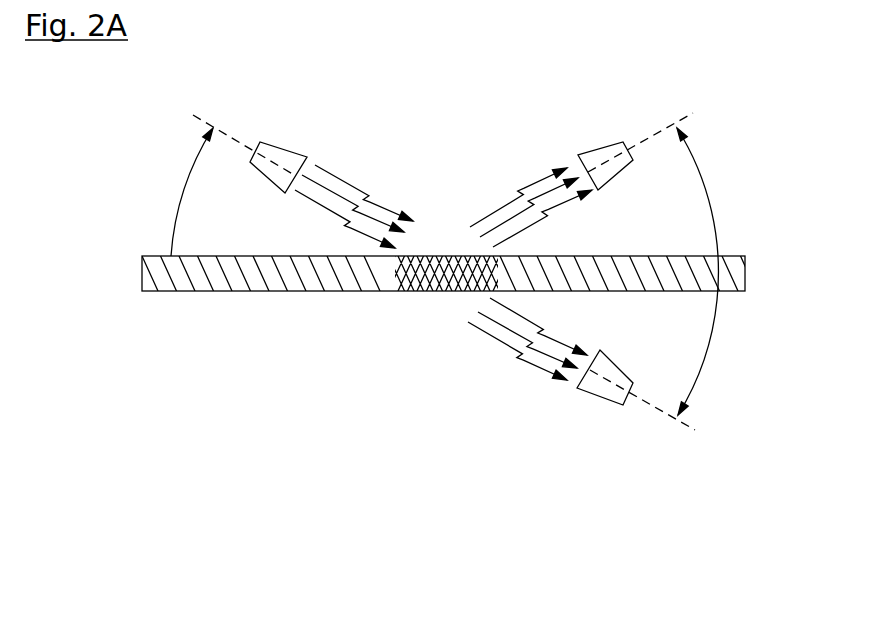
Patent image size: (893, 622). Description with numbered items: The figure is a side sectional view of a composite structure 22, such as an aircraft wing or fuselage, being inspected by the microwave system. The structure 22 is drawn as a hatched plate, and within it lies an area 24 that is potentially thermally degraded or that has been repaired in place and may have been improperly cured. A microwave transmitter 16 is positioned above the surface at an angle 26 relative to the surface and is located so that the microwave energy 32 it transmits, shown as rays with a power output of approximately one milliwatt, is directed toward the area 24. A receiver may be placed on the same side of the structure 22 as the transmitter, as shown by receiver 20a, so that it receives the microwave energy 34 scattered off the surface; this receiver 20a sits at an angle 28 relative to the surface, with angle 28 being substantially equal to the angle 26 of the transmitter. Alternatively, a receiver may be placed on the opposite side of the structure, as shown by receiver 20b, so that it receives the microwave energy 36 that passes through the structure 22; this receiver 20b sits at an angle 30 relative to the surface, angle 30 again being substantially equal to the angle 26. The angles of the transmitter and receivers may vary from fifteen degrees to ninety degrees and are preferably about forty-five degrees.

The microwave transmitter 16 is at (281, 143).
The receiver 20a is at (603, 147).
The receiver 20b is at (605, 399).
The composite structure 22 is at (739, 264).
The area 24 is at (425, 303).
The angle 26 is at (182, 182).
The angle 28 is at (707, 188).
The angle 30 is at (706, 362).
The microwave energy 32 is at (363, 173).
The microwave energy 34 is at (513, 180).
The microwave energy 36 is at (507, 374).